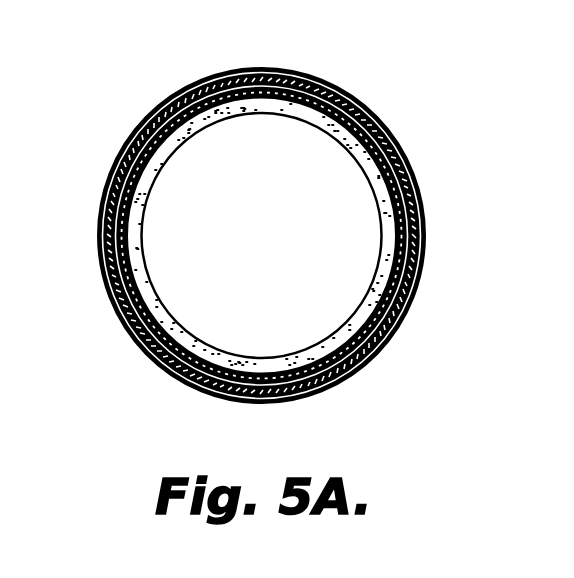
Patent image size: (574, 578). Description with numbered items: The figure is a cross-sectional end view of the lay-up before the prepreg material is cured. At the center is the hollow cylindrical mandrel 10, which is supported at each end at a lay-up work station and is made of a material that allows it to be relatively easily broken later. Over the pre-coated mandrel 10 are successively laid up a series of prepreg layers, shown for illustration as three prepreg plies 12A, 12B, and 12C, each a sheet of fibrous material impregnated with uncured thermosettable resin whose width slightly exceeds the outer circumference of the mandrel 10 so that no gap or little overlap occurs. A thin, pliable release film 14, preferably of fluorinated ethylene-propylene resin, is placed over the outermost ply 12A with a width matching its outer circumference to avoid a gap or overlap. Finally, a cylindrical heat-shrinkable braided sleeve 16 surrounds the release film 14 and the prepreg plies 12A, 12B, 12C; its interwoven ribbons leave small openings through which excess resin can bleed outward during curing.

The hollow cylindrical mandrel 10 is at (143, 203).
The prepreg ply 12A is at (320, 92).
The prepreg ply 12B is at (348, 115).
The prepreg ply 12C is at (410, 184).
The release film 14 is at (137, 143).
The heat-shrinkable braided sleeve 16 is at (218, 74).